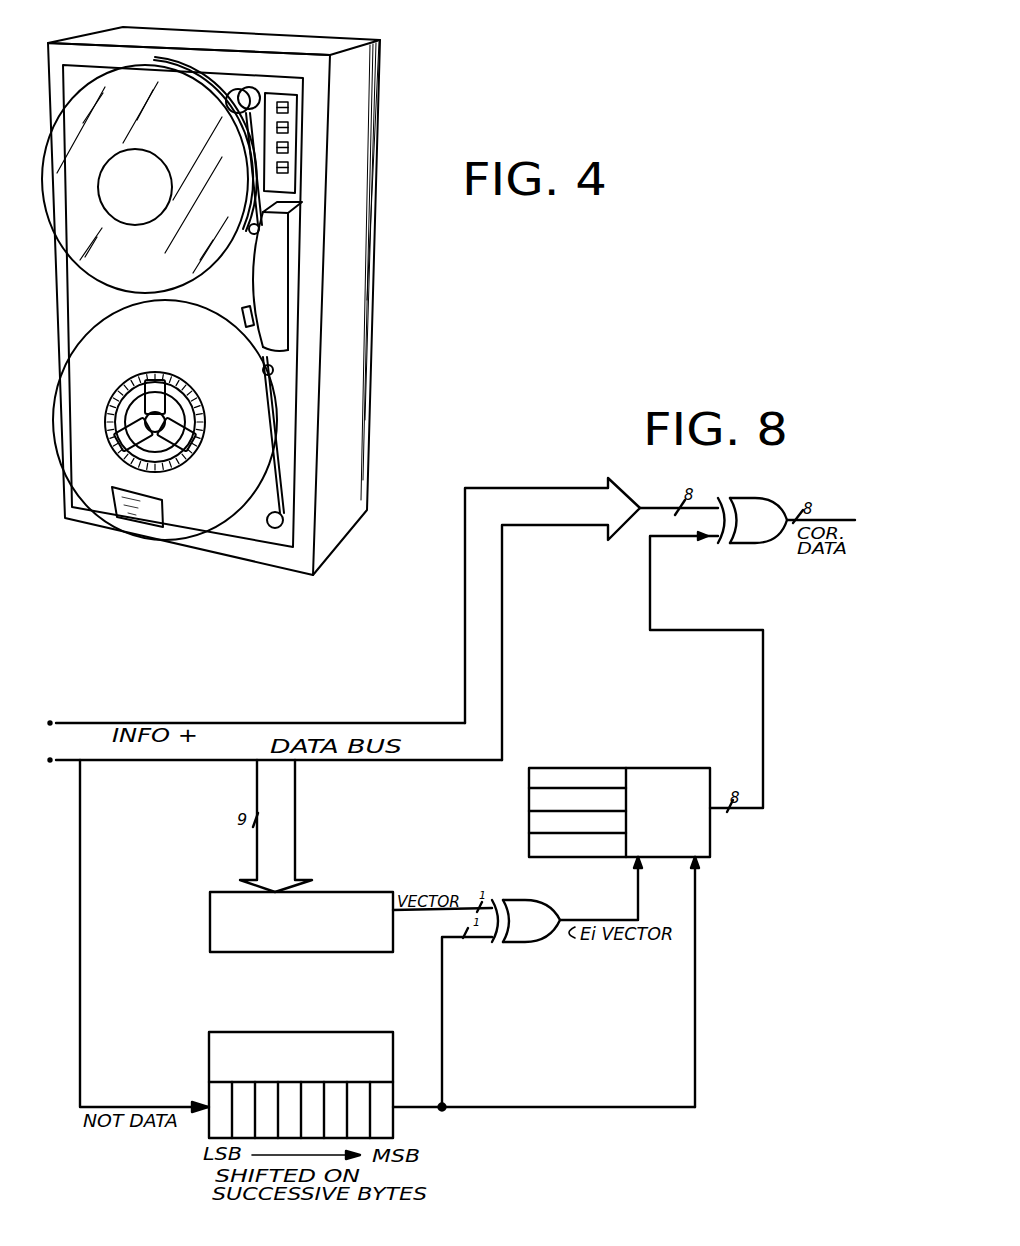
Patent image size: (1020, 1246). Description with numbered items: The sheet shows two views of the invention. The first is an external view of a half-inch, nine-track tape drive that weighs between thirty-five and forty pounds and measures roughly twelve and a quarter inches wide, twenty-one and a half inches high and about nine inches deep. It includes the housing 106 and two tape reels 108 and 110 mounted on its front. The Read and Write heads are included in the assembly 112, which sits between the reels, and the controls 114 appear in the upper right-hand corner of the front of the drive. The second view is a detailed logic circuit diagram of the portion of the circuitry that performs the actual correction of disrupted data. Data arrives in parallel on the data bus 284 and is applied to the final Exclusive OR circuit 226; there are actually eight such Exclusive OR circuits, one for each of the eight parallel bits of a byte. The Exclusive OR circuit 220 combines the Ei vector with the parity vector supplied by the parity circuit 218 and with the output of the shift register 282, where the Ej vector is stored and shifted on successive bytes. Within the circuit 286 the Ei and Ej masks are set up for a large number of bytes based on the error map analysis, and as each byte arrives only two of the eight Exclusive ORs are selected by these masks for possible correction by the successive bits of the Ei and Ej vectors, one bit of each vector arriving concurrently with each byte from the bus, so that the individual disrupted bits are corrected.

In FIG. 4, the housing 106 is at (367, 272).
In FIG. 4, the tape reel 108 is at (140, 90).
In FIG. 4, the tape reel 110 is at (110, 477).
In FIG. 4, the head assembly 112 is at (280, 323).
In FIG. 4, the controls 114 is at (293, 123).
In FIG. 8, the parity circuit 218 is at (210, 902).
In FIG. 8, the Exclusive OR circuit 220 is at (537, 897).
In FIG. 8, the Exclusive OR circuit 226 is at (740, 542).
In FIG. 8, the shift register 282 is at (225, 1032).
In FIG. 8, the data bus 284 is at (530, 457).
In FIG. 8, the mask circuit 286 is at (582, 765).